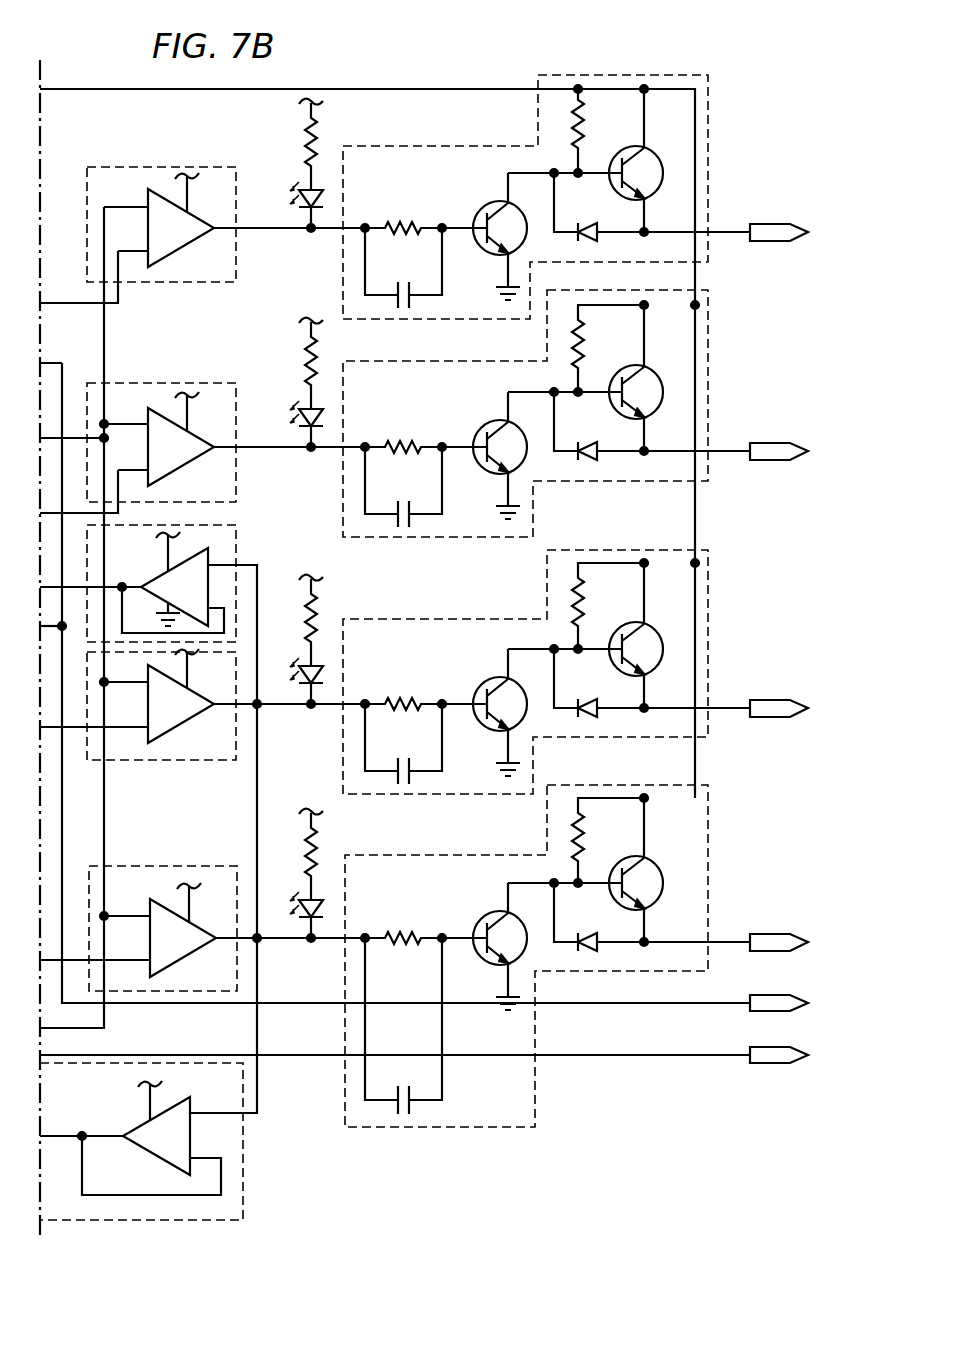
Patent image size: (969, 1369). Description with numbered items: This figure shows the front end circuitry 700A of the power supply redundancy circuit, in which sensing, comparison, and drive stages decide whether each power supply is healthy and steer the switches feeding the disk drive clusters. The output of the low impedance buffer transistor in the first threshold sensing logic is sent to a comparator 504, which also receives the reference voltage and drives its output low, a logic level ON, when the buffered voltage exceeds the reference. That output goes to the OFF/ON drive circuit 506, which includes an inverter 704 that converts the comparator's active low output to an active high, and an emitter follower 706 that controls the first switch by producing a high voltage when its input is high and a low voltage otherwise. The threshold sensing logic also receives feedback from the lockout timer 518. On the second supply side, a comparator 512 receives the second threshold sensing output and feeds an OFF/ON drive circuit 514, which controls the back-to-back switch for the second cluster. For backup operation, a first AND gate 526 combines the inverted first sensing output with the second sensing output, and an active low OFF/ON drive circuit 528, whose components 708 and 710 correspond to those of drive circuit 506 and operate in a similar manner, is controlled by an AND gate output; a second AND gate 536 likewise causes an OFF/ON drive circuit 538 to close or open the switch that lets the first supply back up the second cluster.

The front end circuitry 700A is at (718, 49).
The comparator 504 is at (196, 283).
The comparator 512 is at (196, 383).
The lockout timer 518 is at (236, 548).
The first AND gate 526 is at (190, 760).
The second AND gate 536 is at (175, 866).
The OFF/ON drive circuit 506 is at (708, 124).
The OFF/ON drive circuit 514 is at (708, 366).
The OFF/ON drive circuit 528 is at (708, 620).
The OFF/ON drive circuit 538 is at (712, 848).
The inverter 704 is at (494, 203).
The emitter follower 706 is at (610, 150).
The transistor 708 is at (478, 680).
The transistor 710 is at (611, 626).